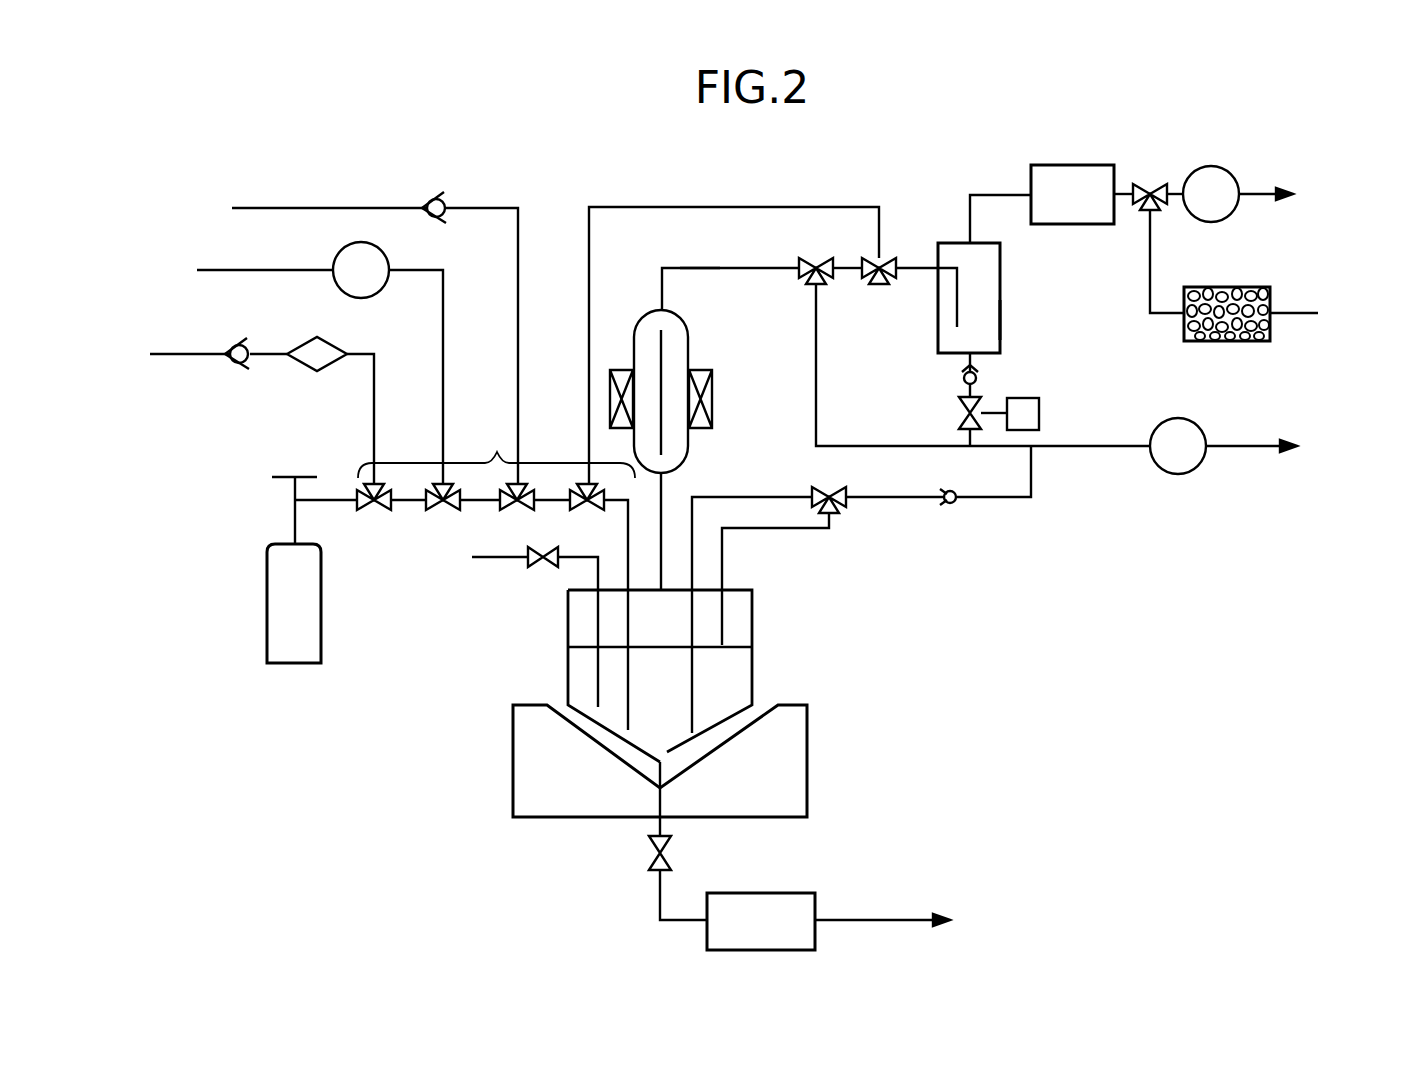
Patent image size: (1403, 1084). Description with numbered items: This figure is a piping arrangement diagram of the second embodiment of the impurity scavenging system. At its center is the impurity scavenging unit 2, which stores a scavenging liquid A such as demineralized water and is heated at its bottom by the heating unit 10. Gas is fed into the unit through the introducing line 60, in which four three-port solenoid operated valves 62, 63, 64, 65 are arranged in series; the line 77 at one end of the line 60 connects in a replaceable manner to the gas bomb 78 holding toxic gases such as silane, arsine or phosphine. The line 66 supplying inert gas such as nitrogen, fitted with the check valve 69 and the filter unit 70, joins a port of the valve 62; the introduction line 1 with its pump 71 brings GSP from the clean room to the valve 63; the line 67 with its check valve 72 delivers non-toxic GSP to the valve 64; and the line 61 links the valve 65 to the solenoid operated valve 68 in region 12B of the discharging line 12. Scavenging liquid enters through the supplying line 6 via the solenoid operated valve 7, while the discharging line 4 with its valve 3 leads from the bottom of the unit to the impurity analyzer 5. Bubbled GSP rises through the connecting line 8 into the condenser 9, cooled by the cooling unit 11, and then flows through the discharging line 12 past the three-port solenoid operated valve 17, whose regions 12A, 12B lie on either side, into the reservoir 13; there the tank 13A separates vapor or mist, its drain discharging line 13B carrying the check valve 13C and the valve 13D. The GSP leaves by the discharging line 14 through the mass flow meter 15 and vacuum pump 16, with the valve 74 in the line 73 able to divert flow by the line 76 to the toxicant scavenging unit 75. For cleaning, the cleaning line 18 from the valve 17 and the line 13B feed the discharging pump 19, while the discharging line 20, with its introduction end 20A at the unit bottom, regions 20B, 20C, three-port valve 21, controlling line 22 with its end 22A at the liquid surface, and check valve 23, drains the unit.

The introduction line 1 is at (447, 316).
The impurity scavenging unit 2 is at (568, 663).
The solenoid operated valve 3 is at (674, 842).
The discharging line 4 is at (660, 912).
The impurity analyzer 5 is at (815, 900).
The scavenging liquid supplying line 6 is at (597, 688).
The solenoid operated valve 7 is at (547, 567).
The connecting line 8 is at (662, 518).
The condenser 9 is at (689, 342).
The heating unit 10 is at (807, 772).
The cooling unit 11 is at (712, 394).
The discharging line 12 is at (760, 268).
The region of the line 12 12A is at (705, 270).
The region of the line 12 12B is at (912, 270).
The reservoir 13 is at (1002, 284).
The tank 13A is at (1002, 326).
The drain discharging line 13B is at (980, 360).
The check valve 13C is at (962, 378).
The solenoid operated valve 13D is at (958, 413).
The discharging line 14 is at (968, 222).
The mass flow meter 15 is at (1060, 165).
The vacuum pump 16 is at (1228, 172).
The solenoid operated valve 17 is at (825, 283).
The cleaning line 18 is at (816, 362).
The discharging pump 19 is at (1154, 420).
The discharging line 20 is at (888, 502).
The introduction end 20A is at (668, 758).
The region of the discharging line 20 20B is at (743, 490).
The region of the discharging line 20 20C is at (994, 496).
The solenoid operated valve 21 is at (826, 491).
The controlling line 22 is at (724, 566).
The introduction end 22A is at (728, 642).
The check valve 23 is at (954, 505).
The introducing line 60 is at (496, 445).
The line 61 is at (670, 207).
The solenoid operated valve 62 is at (378, 508).
The solenoid operated valve 63 is at (444, 508).
The solenoid operated valve 64 is at (521, 508).
The solenoid operated valve 65 is at (590, 508).
The line 66 is at (175, 356).
The line 67 is at (350, 208).
The solenoid operated valve 68 is at (879, 252).
The check valve 69 is at (239, 363).
The filter unit 70 is at (318, 371).
The pump 71 is at (336, 254).
The check valve 72 is at (436, 199).
The line 73 is at (1130, 190).
The solenoid operated valve 74 is at (1154, 186).
The toxicant scavenging unit 75 is at (1272, 290).
The line 76 is at (1167, 315).
The line 77 is at (331, 505).
The gas bomb 78 is at (267, 612).
The scavenging liquid A is at (738, 684).